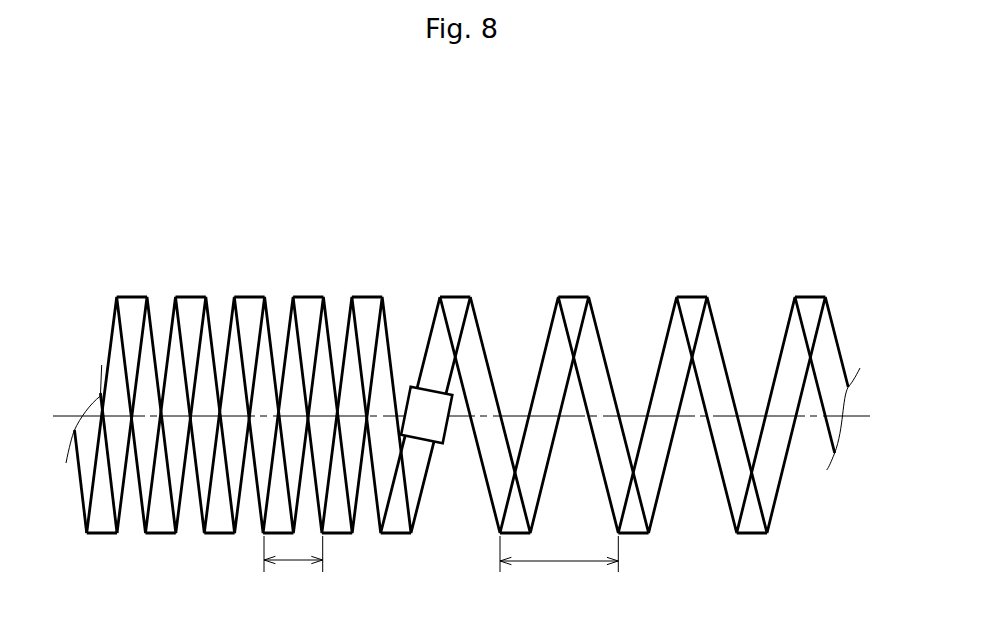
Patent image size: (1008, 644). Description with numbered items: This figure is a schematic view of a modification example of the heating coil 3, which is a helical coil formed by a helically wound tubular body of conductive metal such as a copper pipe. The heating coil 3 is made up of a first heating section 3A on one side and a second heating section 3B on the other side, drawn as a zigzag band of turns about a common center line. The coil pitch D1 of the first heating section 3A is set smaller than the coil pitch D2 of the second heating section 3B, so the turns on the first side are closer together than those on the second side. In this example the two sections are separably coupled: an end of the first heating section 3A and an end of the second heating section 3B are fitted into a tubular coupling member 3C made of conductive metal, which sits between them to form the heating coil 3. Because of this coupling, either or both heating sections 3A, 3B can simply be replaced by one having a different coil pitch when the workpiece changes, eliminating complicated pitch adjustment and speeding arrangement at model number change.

The heating coil 3 is at (461, 357).
The first heating section 3A is at (430, 247).
The second heating section 3B is at (833, 253).
The tubular coupling member 3C is at (444, 446).
The coil pitch of the first heating section D1 is at (293, 562).
The coil pitch of the second heating section D2 is at (563, 562).